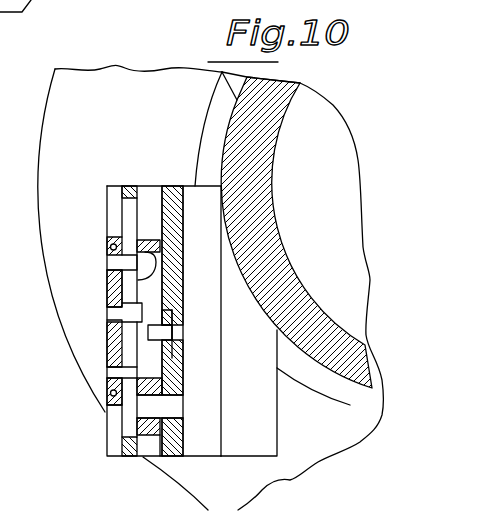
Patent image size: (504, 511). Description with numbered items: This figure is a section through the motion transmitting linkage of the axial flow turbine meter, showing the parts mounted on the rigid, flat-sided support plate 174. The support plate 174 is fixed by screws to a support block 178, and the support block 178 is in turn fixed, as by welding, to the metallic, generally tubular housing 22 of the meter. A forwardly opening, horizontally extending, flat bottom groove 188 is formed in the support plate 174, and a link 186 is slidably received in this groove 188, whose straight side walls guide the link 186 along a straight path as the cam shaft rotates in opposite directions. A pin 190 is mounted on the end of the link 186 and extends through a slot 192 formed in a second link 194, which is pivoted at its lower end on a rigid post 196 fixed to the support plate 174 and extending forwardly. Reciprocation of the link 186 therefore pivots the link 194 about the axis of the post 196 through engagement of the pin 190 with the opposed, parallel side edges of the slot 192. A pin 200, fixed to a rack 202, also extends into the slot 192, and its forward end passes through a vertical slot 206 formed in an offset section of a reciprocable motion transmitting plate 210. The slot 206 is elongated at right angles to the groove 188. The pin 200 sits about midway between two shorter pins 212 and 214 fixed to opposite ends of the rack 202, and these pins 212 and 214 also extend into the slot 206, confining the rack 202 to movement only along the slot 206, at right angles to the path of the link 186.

The housing 22 is at (227, 81).
The support plate 174 is at (170, 186).
The support block 178 is at (213, 407).
The link 186 is at (173, 335).
The groove 188 is at (167, 317).
The pin 190 is at (148, 334).
The slot 192 is at (138, 280).
The link 194 is at (138, 241).
The post 196 is at (152, 424).
The pin 200 is at (128, 300).
The rack 202 is at (115, 328).
The vertical slot 206 is at (127, 203).
The motion transmitting plate 210 is at (117, 412).
The pin 212 is at (133, 364).
The pin 214 is at (115, 258).